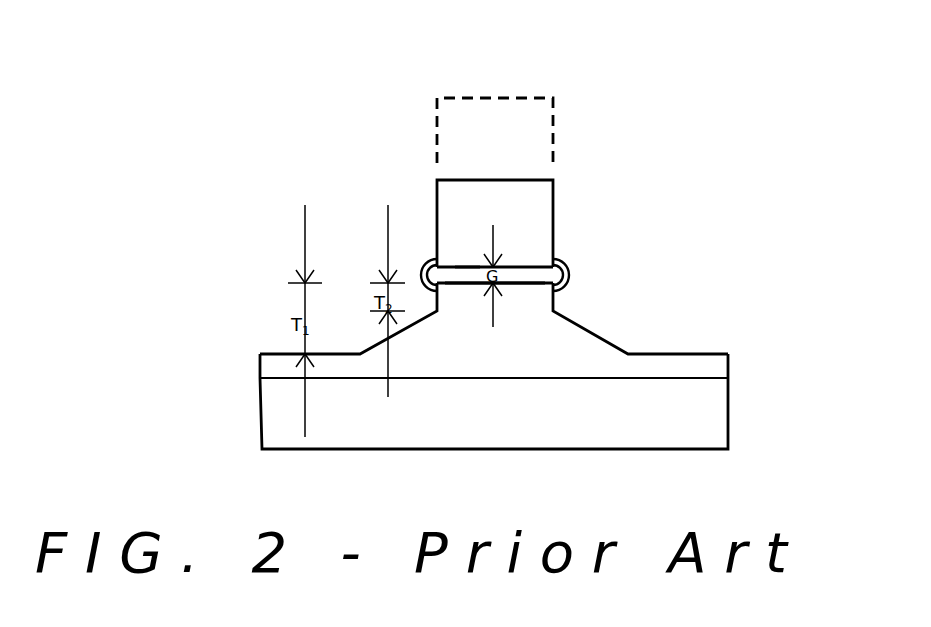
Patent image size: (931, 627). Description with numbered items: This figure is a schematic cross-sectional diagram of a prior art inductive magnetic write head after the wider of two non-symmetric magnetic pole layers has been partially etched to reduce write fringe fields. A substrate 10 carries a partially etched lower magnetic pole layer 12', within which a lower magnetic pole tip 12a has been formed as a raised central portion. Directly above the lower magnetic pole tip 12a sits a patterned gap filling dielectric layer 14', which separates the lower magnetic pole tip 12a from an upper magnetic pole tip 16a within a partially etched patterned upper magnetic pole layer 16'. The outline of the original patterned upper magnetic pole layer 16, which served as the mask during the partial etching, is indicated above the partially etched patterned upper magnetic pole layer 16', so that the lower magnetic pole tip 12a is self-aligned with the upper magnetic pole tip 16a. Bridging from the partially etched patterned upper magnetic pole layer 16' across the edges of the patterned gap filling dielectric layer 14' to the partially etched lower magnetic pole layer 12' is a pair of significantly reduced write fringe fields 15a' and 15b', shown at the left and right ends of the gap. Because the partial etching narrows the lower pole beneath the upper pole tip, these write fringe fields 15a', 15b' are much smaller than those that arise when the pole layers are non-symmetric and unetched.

The substrate 10 is at (277, 419).
The partially etched lower magnetic pole layer 12' is at (447, 330).
The lower magnetic pole tip 12a is at (517, 285).
The patterned gap filling dielectric layer 14' is at (495, 384).
The significantly reduced write fringe field 15a' is at (382, 218).
The significantly reduced write fringe field 15b' is at (601, 260).
The patterned upper magnetic pole layer 16 is at (440, 130).
The partially etched patterned upper magnetic pole layer 16' is at (538, 223).
The upper magnetic pole tip 16a is at (465, 266).